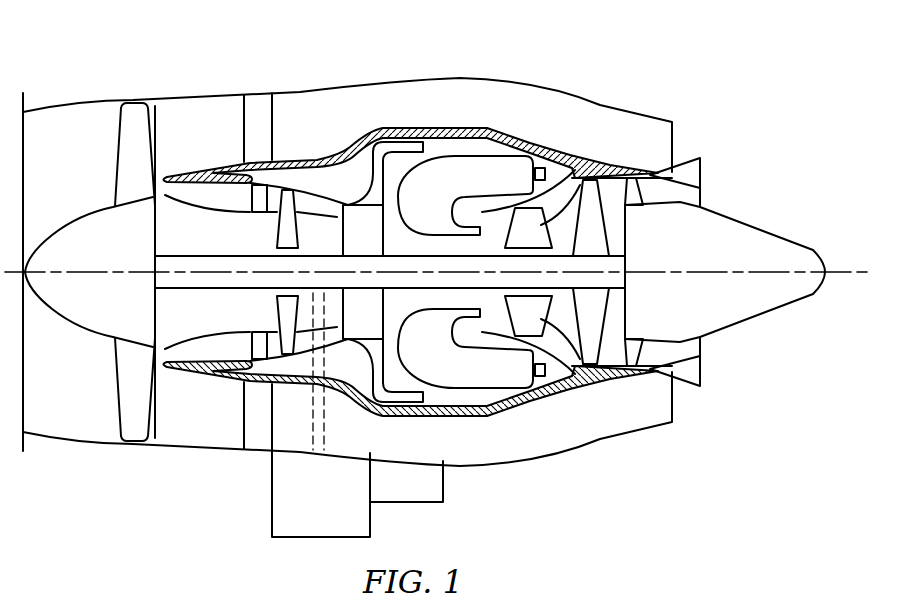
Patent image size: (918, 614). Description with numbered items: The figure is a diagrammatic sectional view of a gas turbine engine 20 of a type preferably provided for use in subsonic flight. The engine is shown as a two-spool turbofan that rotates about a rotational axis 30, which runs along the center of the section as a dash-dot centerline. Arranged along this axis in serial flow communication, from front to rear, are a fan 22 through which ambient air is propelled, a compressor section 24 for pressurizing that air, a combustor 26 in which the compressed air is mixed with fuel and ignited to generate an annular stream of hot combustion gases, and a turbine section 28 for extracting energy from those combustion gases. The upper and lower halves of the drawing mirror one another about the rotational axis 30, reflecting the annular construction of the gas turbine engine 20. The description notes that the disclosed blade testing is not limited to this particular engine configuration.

The gas turbine engine 20 is at (693, 92).
The fan 22 is at (133, 425).
The compressor section 24 is at (305, 345).
The combustor 26 is at (462, 170).
The turbine section 28 is at (610, 185).
The rotational axis 30 is at (847, 273).